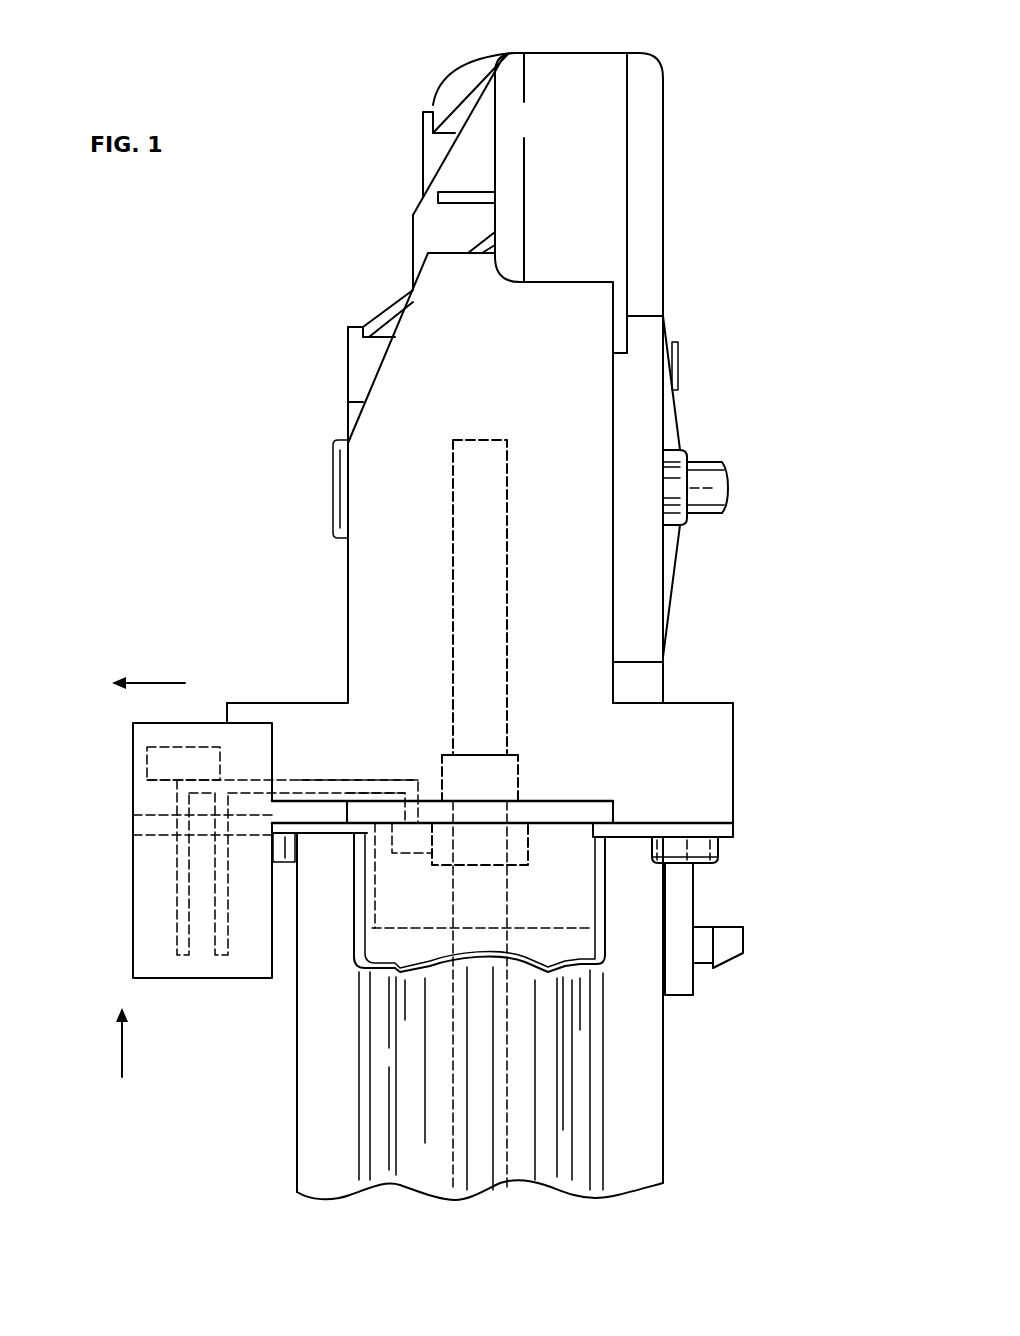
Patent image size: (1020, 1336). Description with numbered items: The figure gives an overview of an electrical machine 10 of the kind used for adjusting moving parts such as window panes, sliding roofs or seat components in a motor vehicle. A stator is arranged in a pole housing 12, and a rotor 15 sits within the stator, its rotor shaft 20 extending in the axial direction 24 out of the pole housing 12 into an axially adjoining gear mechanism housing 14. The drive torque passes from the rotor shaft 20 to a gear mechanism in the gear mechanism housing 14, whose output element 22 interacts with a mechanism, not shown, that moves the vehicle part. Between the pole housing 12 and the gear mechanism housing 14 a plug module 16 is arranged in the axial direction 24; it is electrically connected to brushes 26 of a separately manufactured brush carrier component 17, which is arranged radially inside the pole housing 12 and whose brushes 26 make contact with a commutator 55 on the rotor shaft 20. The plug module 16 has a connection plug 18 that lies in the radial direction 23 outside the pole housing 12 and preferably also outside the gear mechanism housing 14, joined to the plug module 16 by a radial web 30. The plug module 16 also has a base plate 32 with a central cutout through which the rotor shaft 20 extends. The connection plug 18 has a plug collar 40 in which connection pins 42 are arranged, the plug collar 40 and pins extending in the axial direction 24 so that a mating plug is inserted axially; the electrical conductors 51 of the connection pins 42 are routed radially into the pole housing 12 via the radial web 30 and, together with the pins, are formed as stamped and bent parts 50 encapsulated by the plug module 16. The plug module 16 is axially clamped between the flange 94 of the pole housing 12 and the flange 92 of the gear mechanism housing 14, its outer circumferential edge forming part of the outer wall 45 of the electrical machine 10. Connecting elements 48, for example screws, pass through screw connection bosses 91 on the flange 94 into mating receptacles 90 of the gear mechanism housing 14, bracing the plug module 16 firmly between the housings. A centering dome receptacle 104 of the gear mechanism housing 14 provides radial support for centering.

The electrical machine 10 is at (738, 160).
The pole housing 12 is at (322, 1087).
The gear mechanism housing 14 is at (445, 378).
The rotor 15 is at (482, 907).
The plug module 16 is at (530, 797).
The brush carrier component 17 is at (558, 868).
The connection plug 18 is at (122, 870).
The rotor shaft 20 is at (483, 598).
The output element 22 is at (710, 478).
The radial direction 23 is at (160, 682).
The axial direction 24 is at (122, 1043).
The brushes 26 is at (418, 842).
The radial web 30 is at (297, 813).
The base plate 32 is at (543, 812).
The plug collar 40 is at (158, 913).
The connection pins 42 is at (222, 943).
The outer wall 45 is at (555, 690).
The connecting elements 48 is at (697, 847).
The stamped and bent parts 50 is at (350, 787).
The electrical conductors 51 is at (317, 787).
The commutator 55 is at (518, 852).
The mating receptacles 90 is at (690, 817).
The screw connection bosses 91 is at (713, 828).
The flange of the gear mechanism housing 92 is at (589, 787).
The flange of the pole housing 94 is at (568, 825).
The centering dome receptacle 104 is at (513, 775).